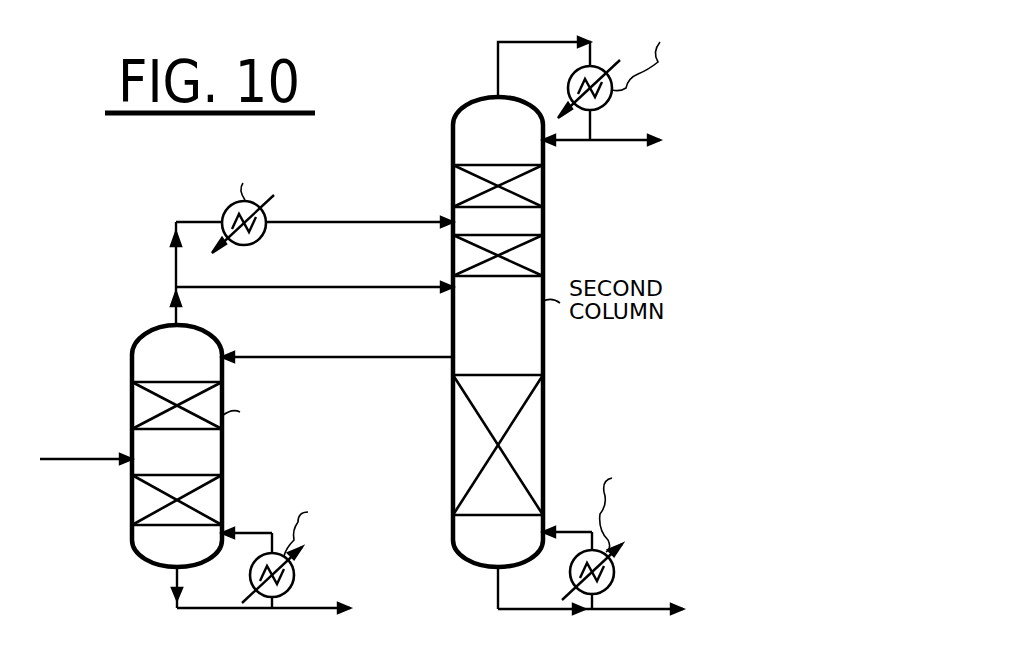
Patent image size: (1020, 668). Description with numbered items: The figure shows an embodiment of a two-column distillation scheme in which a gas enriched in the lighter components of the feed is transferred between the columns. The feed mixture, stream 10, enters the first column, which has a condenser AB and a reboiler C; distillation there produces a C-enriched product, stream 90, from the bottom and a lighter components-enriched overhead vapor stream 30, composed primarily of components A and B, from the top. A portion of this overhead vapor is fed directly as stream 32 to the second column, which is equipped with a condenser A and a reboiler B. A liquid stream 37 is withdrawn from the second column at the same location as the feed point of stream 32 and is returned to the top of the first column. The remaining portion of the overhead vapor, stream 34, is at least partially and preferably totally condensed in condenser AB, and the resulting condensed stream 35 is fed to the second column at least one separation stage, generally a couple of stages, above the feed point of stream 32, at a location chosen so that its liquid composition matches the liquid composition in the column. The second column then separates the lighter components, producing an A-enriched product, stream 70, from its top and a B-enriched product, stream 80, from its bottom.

The feed mixture stream 10 is at (68, 462).
The overhead vapor stream 30 is at (176, 300).
The vapor feed stream to second column 32 is at (382, 287).
The remaining vapor portion stream 34 is at (176, 252).
The condensed stream 35 is at (360, 220).
The liquid stream 37 is at (358, 357).
The A-enriched product stream 70 is at (620, 143).
The B-enriched product stream 80 is at (636, 612).
The C-enriched product stream 90 is at (300, 611).